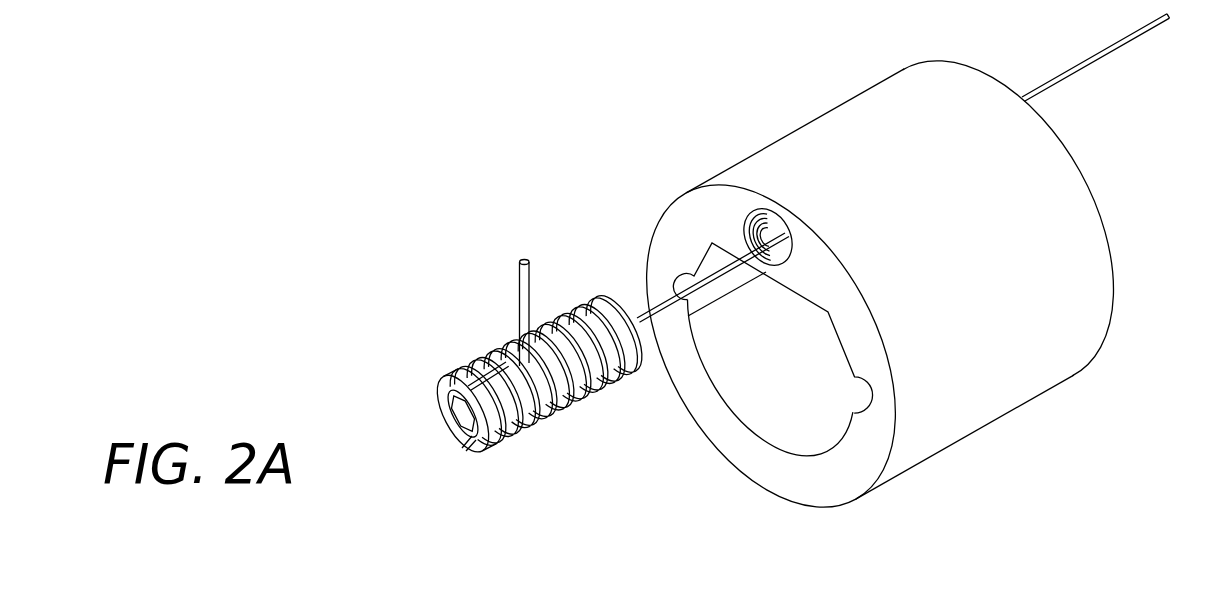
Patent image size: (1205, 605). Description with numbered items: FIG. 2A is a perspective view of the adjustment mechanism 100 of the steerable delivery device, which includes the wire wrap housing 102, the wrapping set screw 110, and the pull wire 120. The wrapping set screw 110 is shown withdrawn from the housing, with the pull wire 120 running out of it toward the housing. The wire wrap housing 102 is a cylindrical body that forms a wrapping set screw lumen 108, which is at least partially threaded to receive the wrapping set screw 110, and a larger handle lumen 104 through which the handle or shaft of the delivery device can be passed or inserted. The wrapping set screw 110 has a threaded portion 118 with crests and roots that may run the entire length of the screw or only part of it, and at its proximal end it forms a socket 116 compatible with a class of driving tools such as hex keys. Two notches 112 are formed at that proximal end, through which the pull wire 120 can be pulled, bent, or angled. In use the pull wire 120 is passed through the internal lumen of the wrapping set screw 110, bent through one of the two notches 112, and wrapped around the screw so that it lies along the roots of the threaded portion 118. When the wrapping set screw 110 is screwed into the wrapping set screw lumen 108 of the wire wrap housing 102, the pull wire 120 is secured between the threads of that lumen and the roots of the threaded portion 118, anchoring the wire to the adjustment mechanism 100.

The adjustment mechanism 100 is at (875, 282).
The wire wrap housing 102 is at (827, 137).
The handle lumen 104 is at (750, 405).
The wrapping set screw lumen 108 is at (793, 242).
The wrapping set screw 110 is at (497, 355).
The notches 112 is at (495, 368).
The socket 116 is at (455, 418).
The threaded portion 118 is at (565, 400).
The pull wire 120 is at (527, 258).